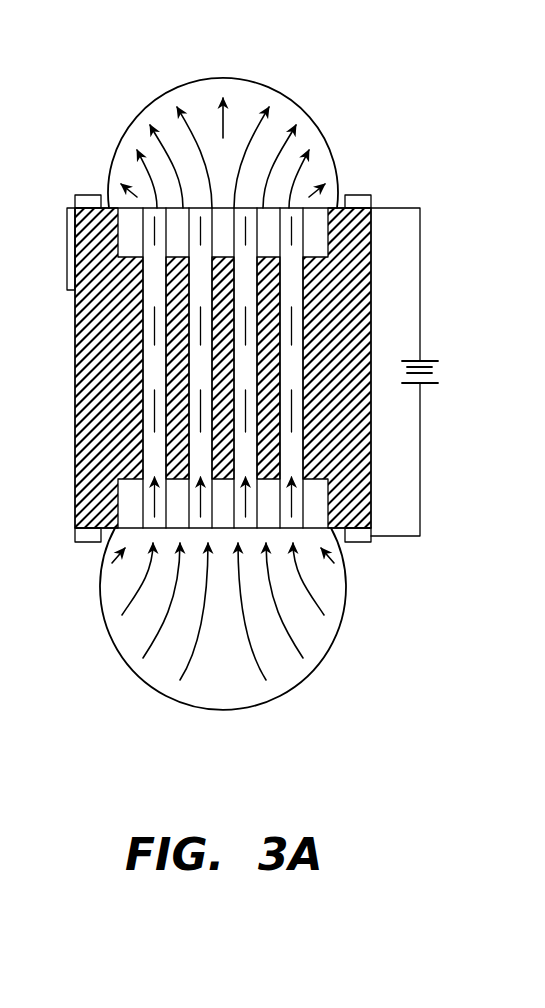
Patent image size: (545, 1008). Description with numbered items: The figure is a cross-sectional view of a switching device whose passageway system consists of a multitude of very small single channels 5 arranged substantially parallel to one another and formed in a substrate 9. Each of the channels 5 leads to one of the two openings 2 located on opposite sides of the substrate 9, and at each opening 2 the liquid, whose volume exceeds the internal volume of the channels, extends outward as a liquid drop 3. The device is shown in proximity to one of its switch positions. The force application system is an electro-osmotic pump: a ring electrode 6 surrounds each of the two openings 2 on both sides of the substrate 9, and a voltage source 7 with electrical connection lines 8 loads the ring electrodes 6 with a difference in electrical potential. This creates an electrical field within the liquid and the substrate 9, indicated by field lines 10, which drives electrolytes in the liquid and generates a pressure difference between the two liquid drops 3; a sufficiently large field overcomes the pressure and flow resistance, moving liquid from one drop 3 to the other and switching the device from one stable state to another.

The opening 2 is at (155, 267).
The liquid drop 3 is at (242, 80).
The channel 5 is at (200, 458).
The ring electrode 6 is at (358, 195).
The voltage source 7 is at (432, 385).
The electrical connection line 8 is at (421, 276).
The substrate 9 is at (346, 379).
The field lines 10 is at (192, 128).